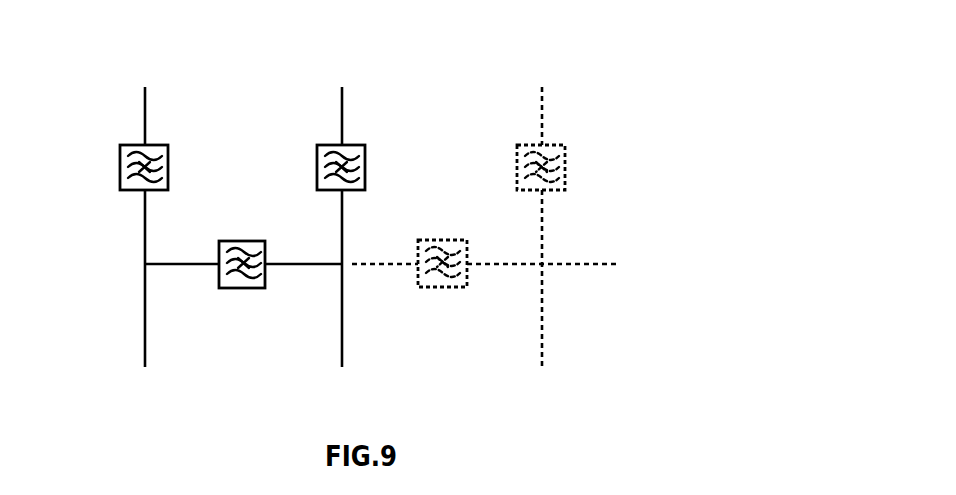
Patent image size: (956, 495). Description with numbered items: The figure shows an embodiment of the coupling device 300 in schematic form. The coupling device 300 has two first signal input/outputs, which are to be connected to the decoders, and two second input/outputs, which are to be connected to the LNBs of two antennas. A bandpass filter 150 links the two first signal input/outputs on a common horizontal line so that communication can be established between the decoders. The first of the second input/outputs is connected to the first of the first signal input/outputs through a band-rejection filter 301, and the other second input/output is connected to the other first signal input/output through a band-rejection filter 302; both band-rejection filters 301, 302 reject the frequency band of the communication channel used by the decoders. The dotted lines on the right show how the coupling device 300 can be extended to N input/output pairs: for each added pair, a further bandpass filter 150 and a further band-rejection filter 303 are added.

The coupling device 300 is at (628, 62).
The band-rejection filter 301 is at (120, 166).
The band-rejection filter 302 is at (317, 166).
The band-rejection filter 303 is at (517, 162).
The bandpass filter 150 is at (244, 288).